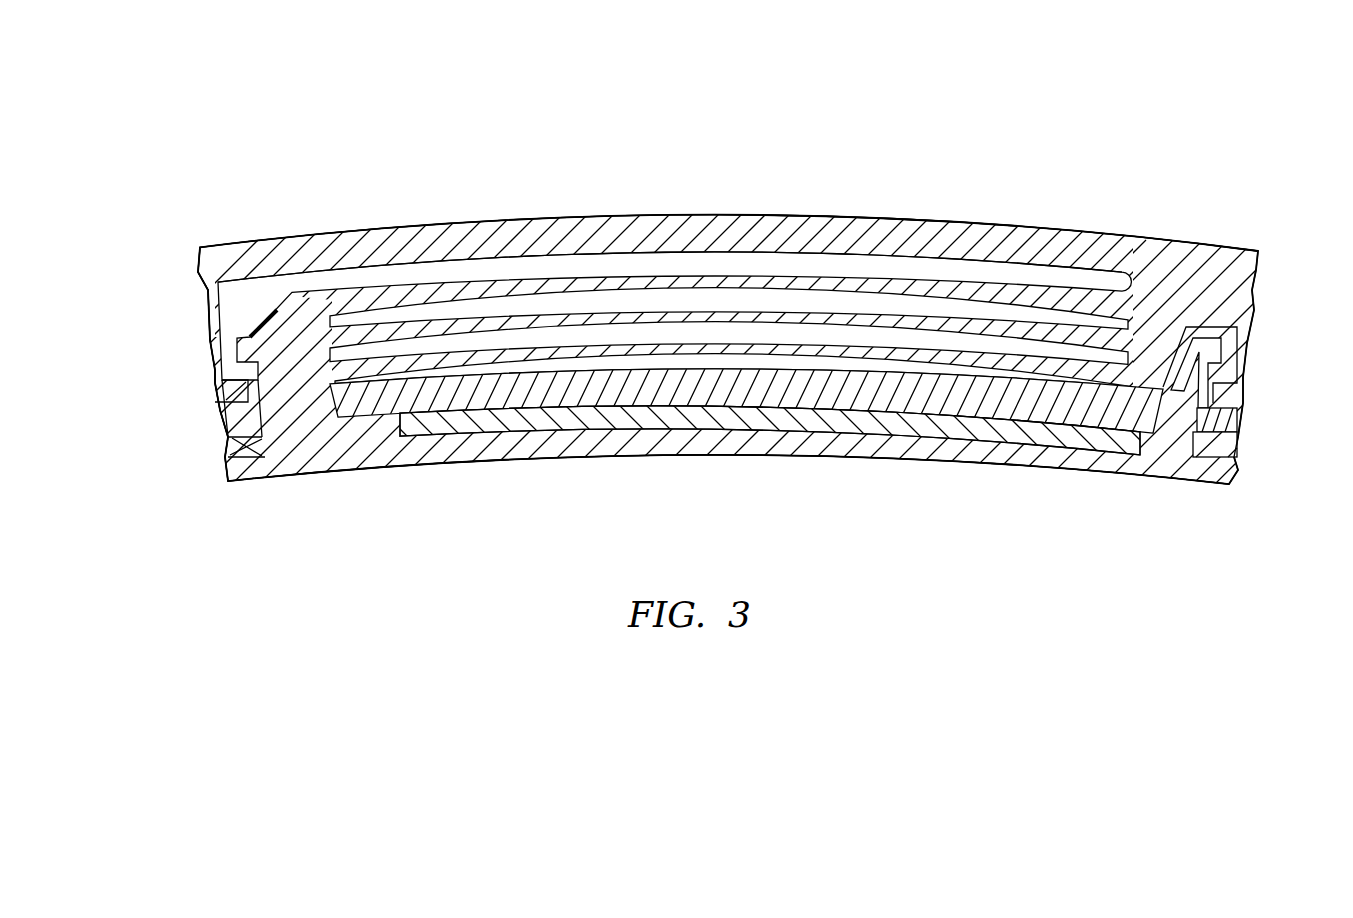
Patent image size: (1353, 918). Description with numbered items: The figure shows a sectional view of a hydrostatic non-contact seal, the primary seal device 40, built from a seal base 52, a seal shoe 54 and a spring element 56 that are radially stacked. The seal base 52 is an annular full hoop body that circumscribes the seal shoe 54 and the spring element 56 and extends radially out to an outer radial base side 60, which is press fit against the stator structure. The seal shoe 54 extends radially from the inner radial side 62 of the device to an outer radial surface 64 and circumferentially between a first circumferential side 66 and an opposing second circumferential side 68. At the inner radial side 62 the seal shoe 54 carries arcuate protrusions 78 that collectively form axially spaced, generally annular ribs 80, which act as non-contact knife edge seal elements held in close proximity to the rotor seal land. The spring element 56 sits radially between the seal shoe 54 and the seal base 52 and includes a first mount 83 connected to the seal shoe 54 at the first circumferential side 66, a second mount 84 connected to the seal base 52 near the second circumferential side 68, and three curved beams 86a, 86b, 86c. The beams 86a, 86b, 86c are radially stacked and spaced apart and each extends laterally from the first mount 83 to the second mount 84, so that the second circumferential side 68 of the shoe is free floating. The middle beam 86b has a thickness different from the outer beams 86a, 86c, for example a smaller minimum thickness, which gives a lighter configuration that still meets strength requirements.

The primary seal device 40 is at (1203, 107).
The seal base 52 is at (1092, 232).
The seal shoe 54 is at (222, 485).
The spring element 56 is at (258, 371).
The outer radial base side 60 is at (836, 230).
The inner radial side 62 is at (469, 502).
The outer radial surface 64 is at (599, 369).
The first circumferential side 66 is at (228, 454).
The second circumferential side 68 is at (1228, 424).
The arcuate protrusion 78 is at (941, 440).
The rib 80 is at (941, 440).
The first mount 83 is at (277, 316).
The second mount 84 is at (1233, 298).
The first beam 86a is at (750, 272).
The middle beam 86b is at (718, 312).
The third beam 86c is at (665, 350).